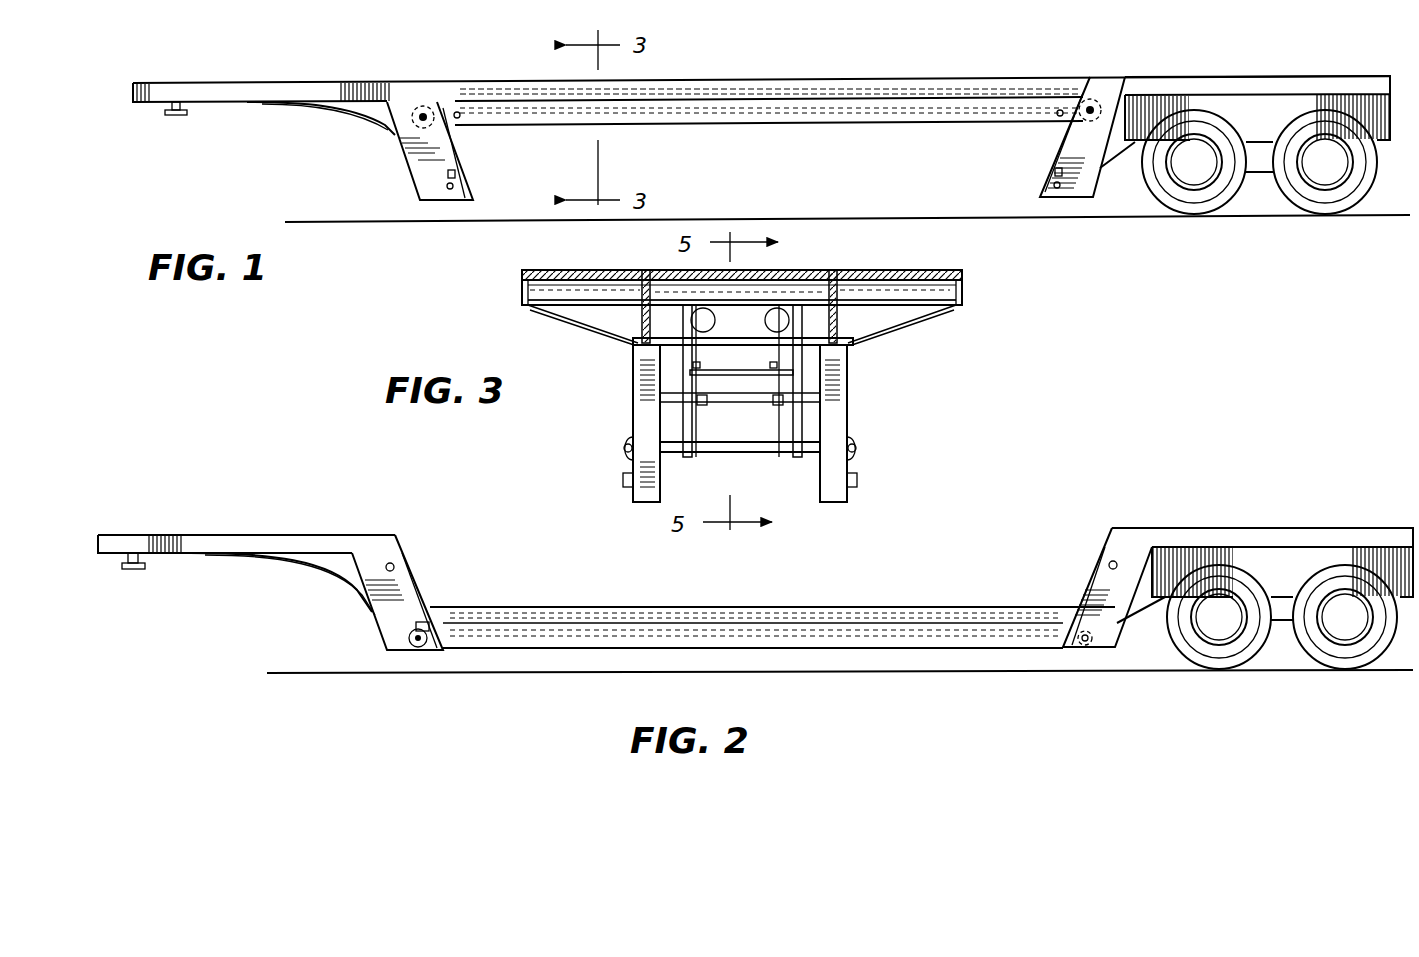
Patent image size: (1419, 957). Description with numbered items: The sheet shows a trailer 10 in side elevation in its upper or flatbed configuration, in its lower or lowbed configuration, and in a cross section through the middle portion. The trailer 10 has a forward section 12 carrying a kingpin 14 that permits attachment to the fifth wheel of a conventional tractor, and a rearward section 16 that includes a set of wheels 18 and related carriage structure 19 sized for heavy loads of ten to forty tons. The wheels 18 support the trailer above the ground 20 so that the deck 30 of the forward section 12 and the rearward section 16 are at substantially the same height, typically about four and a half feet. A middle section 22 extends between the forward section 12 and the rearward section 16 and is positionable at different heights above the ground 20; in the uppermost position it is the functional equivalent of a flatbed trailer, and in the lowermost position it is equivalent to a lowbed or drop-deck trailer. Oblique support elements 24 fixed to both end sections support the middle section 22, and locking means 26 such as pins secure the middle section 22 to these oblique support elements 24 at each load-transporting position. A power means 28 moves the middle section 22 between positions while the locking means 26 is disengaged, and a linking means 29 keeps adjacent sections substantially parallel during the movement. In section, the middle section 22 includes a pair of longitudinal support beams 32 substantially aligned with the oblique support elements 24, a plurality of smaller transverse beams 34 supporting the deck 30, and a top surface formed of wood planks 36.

In FIG. 1, the trailer 10 is at (893, 56).
In FIG. 1, the forward section 12 is at (305, 88).
In FIG. 2, the forward section 12 is at (303, 542).
In FIG. 1, the kingpin 14 is at (176, 116).
In FIG. 2, the kingpin 14 is at (137, 572).
In FIG. 1, the rearward section 16 is at (1282, 88).
In FIG. 2, the rearward section 16 is at (1330, 540).
In FIG. 1, the wheels 18 is at (1328, 200).
In FIG. 2, the wheels 18 is at (1353, 653).
In FIG. 1, the carriage structure 19 is at (1258, 165).
In FIG. 2, the carriage structure 19 is at (1282, 622).
In FIG. 1, the ground 20 is at (968, 214).
In FIG. 1, the middle section 22 is at (818, 112).
In FIG. 3, the middle section 22 is at (965, 285).
In FIG. 2, the middle section 22 is at (828, 640).
In FIG. 1, the oblique support elements 24 is at (430, 172).
In FIG. 3, the oblique support elements 24 is at (640, 422).
In FIG. 2, the oblique support elements 24 is at (400, 578).
In FIG. 1, the locking means 26 is at (423, 106).
In FIG. 2, the locking means 26 is at (419, 647).
In FIG. 3, the power means 28 is at (772, 310).
In FIG. 3, the linking means 29 is at (805, 415).
In FIG. 1, the deck 30 is at (764, 80).
In FIG. 3, the deck 30 is at (587, 268).
In FIG. 3, the longitudinal support beams 32 is at (640, 322).
In FIG. 3, the transverse beams 34 is at (905, 297).
In FIG. 3, the wood planks 36 is at (930, 270).